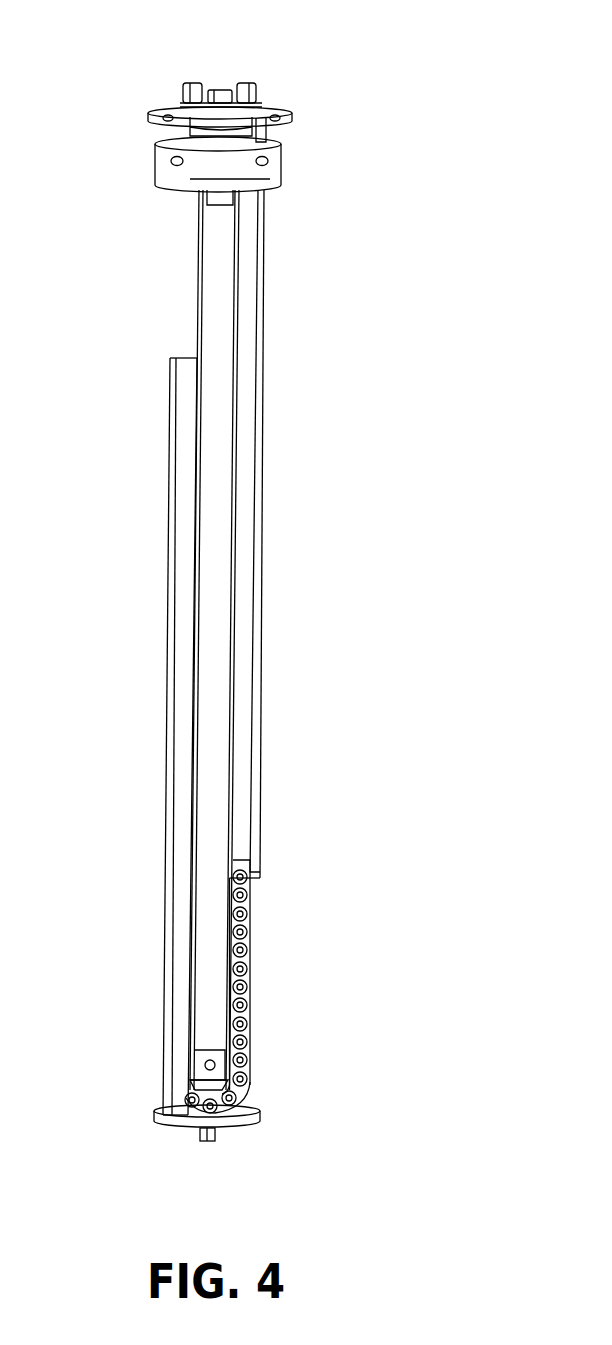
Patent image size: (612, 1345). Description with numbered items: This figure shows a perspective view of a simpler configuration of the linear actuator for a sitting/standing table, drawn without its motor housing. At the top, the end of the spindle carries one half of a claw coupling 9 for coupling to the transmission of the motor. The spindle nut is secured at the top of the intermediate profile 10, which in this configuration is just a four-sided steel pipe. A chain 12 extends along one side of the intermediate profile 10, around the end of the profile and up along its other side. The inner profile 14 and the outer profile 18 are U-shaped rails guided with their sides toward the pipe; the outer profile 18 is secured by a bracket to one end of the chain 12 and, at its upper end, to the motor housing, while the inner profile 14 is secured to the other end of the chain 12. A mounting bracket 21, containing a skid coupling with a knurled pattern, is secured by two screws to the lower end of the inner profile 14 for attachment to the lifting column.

The claw coupling 9 is at (247, 83).
The intermediate profile 10 is at (210, 273).
The outer profile 18 is at (250, 321).
The inner profile 14 is at (167, 690).
The chain 12 is at (248, 1017).
The mounting bracket 21 is at (248, 1128).